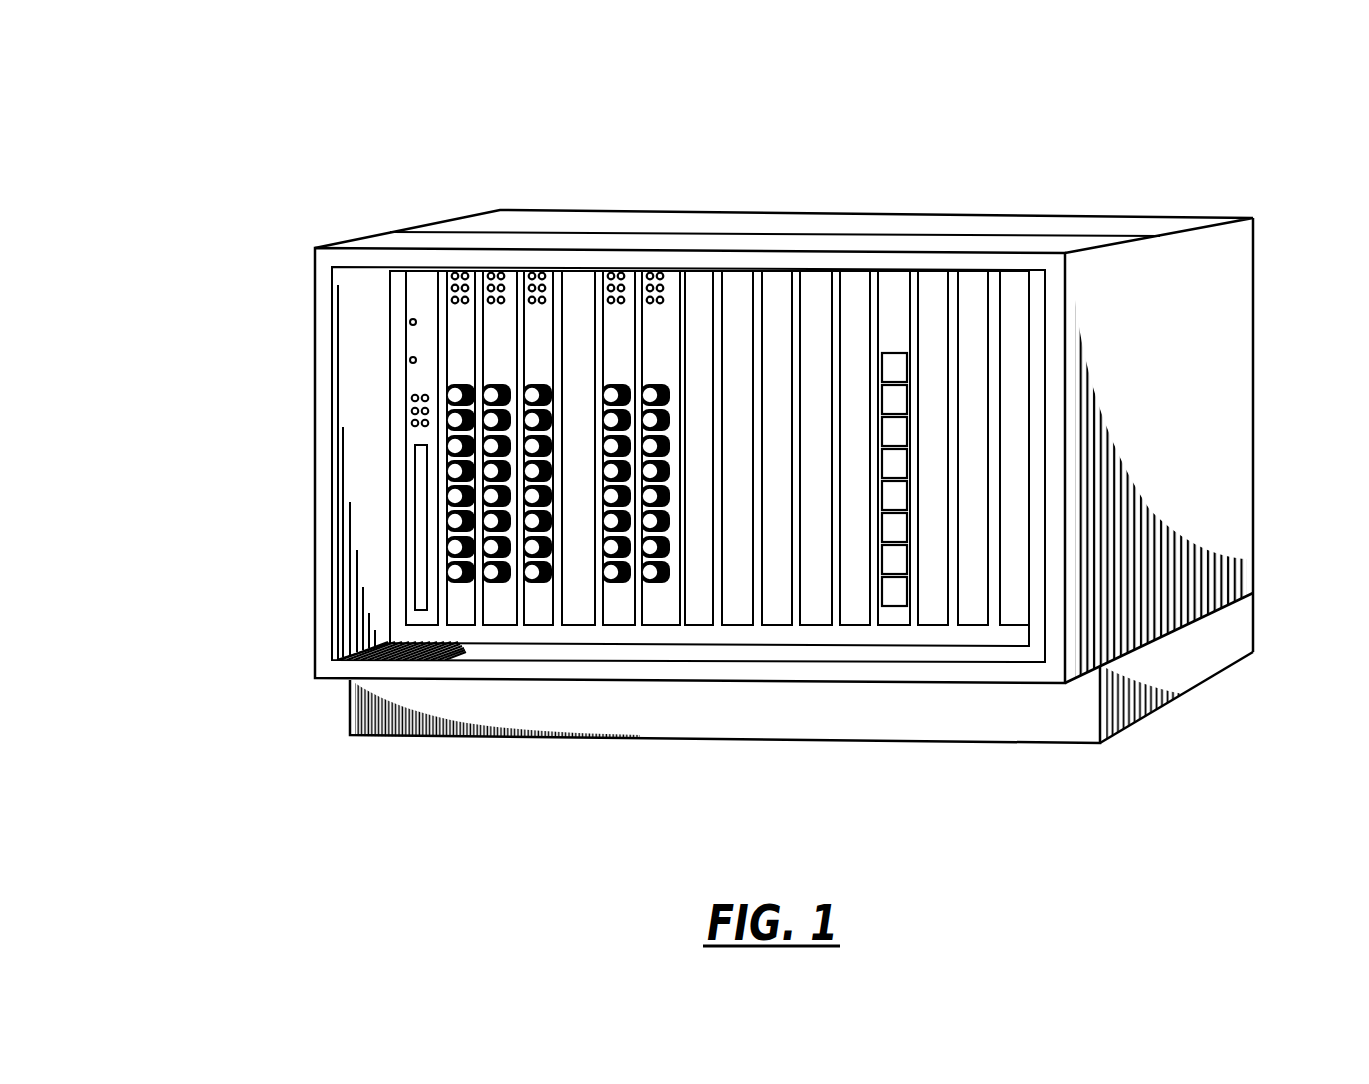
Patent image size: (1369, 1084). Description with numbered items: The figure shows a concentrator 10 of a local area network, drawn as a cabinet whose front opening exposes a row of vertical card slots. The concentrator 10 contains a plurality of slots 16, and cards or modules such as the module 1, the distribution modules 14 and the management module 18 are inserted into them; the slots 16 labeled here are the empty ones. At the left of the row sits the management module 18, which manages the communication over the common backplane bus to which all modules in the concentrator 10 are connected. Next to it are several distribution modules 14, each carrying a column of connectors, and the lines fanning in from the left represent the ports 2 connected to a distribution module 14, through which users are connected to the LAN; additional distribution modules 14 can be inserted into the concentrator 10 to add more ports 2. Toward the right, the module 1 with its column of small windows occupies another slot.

The concentrator 10 is at (1252, 273).
The management module 18 is at (420, 287).
The distribution module 14 is at (422, 545).
The port 2 is at (450, 572).
The slots 16 is at (578, 290).
The module 1 is at (890, 297).